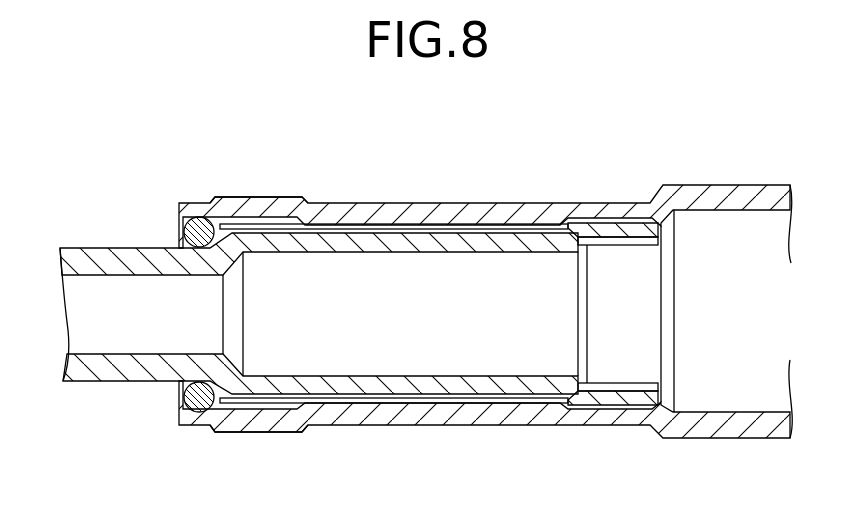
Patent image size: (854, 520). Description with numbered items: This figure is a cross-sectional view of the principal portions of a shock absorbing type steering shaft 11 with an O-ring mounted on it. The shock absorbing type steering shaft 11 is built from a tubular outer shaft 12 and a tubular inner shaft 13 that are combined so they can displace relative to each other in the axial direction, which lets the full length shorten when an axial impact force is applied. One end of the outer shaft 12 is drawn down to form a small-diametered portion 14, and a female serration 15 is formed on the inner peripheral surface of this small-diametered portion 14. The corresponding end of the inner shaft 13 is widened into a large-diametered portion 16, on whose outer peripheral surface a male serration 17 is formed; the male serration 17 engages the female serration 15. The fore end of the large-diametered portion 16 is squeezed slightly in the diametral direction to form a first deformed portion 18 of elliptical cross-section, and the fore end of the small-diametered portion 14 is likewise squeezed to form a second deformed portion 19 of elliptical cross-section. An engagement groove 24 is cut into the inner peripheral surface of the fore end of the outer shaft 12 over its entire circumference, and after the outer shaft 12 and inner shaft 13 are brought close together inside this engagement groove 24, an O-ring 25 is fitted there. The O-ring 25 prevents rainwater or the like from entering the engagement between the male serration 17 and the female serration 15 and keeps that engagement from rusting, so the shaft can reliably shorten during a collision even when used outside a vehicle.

The shock absorbing type steering shaft 11 is at (477, 186).
The outer shaft 12 is at (700, 185).
The inner shaft 13 is at (428, 396).
The small-diametered portion 14 is at (375, 203).
The female serration 15 is at (356, 386).
The large-diametered portion 16 is at (500, 403).
The male serration 17 is at (280, 224).
The first deformed portion 18 is at (625, 396).
The second deformed portion 19 is at (222, 197).
The engagement groove 24 is at (183, 405).
The O-ring 25 is at (182, 232).